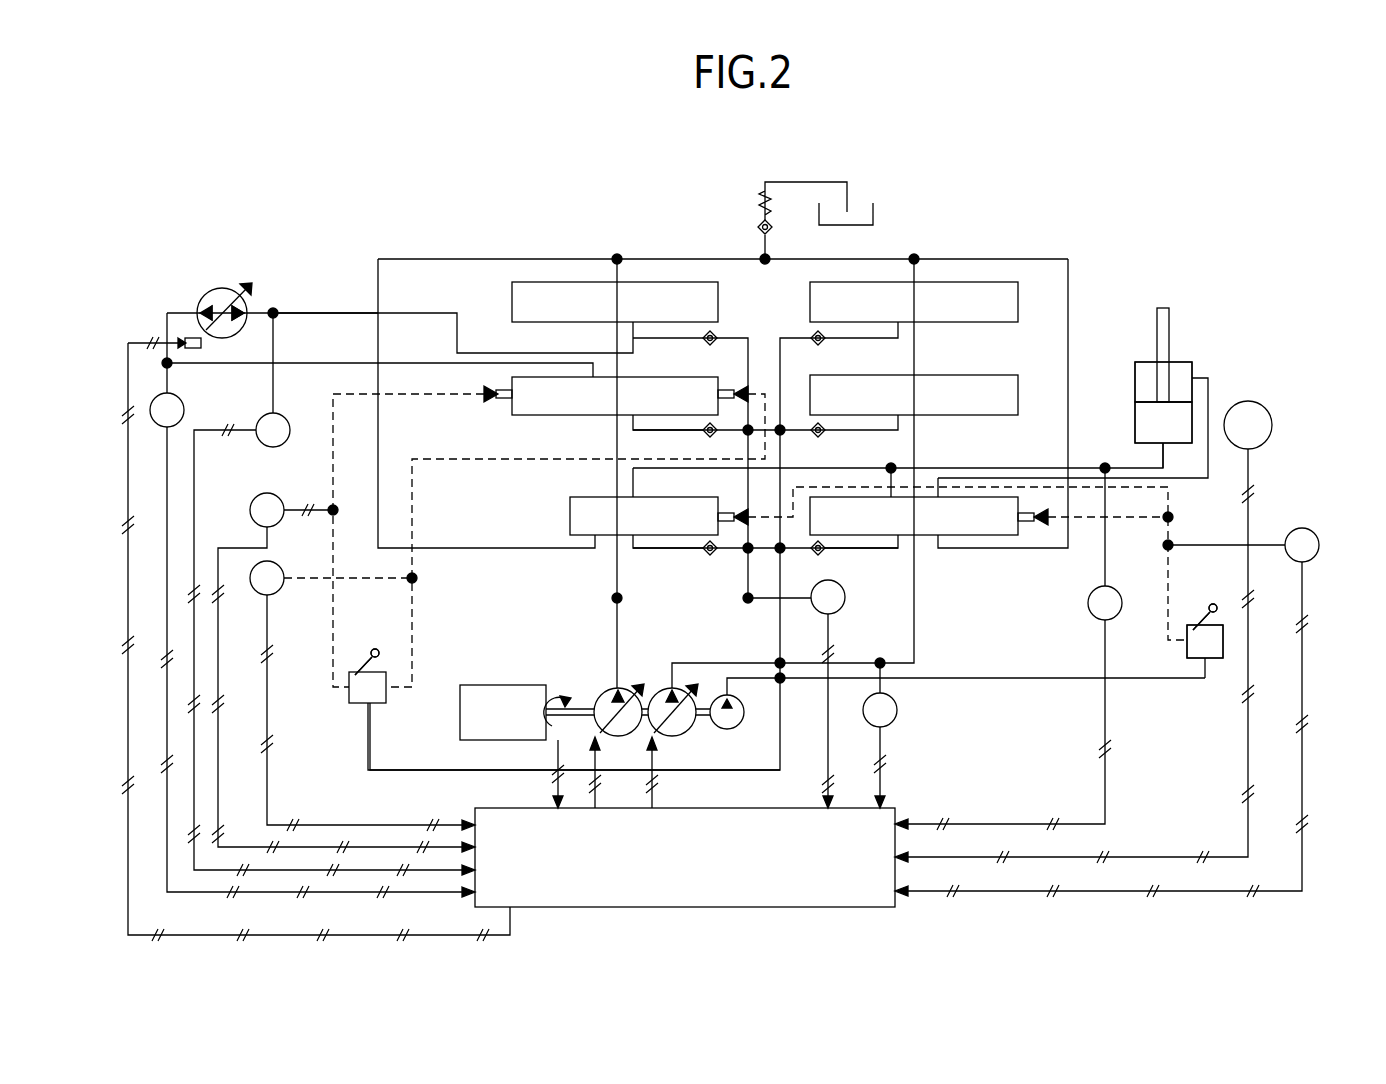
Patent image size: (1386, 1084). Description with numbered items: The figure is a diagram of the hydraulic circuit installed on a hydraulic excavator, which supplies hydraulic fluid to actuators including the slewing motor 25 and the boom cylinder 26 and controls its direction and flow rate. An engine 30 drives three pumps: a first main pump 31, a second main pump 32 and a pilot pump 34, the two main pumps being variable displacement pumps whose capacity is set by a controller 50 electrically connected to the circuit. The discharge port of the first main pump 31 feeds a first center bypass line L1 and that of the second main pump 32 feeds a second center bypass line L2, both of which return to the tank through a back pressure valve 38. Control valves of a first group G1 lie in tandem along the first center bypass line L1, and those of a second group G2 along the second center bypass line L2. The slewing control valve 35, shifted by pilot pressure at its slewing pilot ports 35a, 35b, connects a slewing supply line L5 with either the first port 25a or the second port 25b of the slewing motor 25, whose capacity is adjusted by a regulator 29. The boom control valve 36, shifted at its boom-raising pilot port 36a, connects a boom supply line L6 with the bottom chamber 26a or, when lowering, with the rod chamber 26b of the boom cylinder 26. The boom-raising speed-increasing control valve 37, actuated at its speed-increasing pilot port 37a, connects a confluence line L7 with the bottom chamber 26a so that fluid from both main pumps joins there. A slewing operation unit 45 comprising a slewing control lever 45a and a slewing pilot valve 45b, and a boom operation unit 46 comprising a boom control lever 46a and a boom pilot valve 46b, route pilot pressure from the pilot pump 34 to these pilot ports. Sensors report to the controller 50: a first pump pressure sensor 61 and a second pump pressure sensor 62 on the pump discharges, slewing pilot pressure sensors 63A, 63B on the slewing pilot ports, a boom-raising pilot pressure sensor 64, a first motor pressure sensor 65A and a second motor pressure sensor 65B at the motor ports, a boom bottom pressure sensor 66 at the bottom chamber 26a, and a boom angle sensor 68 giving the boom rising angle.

The slewing motor 25 is at (218, 278).
The first port 25a is at (203, 300).
The second port 25b is at (246, 298).
The regulator 29 is at (186, 338).
The boom cylinder 26 is at (1208, 348).
The bottom chamber 26a is at (1135, 430).
The rod chamber 26b is at (1135, 385).
The engine 30 is at (510, 684).
The first main pump 31 is at (600, 690).
The second main pump 32 is at (655, 690).
The pilot pump 34 is at (744, 722).
The slewing control valve 35 is at (583, 418).
The slewing pilot port 35a is at (482, 388).
The slewing pilot port 35b is at (742, 385).
The boom control valve 36 is at (960, 538).
The boom-raising pilot port 36a is at (1025, 538).
The boom-raising speed-increasing control valve 37 is at (582, 497).
The speed-increasing pilot port 37a is at (735, 512).
The back pressure valve 38 is at (755, 226).
The slewing operation unit 45 is at (355, 648).
The slewing control lever 45a is at (350, 672).
The slewing pilot valve 45b is at (365, 708).
The boom operation unit 46 is at (1228, 690).
The boom control lever 46a is at (1208, 605).
The boom pilot valve 46b is at (1186, 650).
The controller 50 is at (830, 907).
The first pump pressure sensor 61 is at (846, 598).
The second pump pressure sensor 62 is at (898, 712).
The slewing pilot pressure sensor 63A is at (300, 476).
The slewing pilot pressure sensor 63B is at (280, 598).
The boom-raising pilot pressure sensor 64 is at (1315, 535).
The first motor pressure sensor 65A is at (186, 398).
The second motor pressure sensor 65B is at (262, 446).
The boom bottom pressure sensor 66 is at (1120, 595).
The boom angle sensor 68 is at (1262, 410).
The first center bypass line L1 is at (612, 275).
The second center bypass line L2 is at (918, 275).
The slewing supply line L5 is at (700, 432).
The boom supply line L6 is at (858, 550).
The confluence line L7 is at (700, 550).
The first group G1 is at (478, 300).
The second group G2 is at (1040, 303).